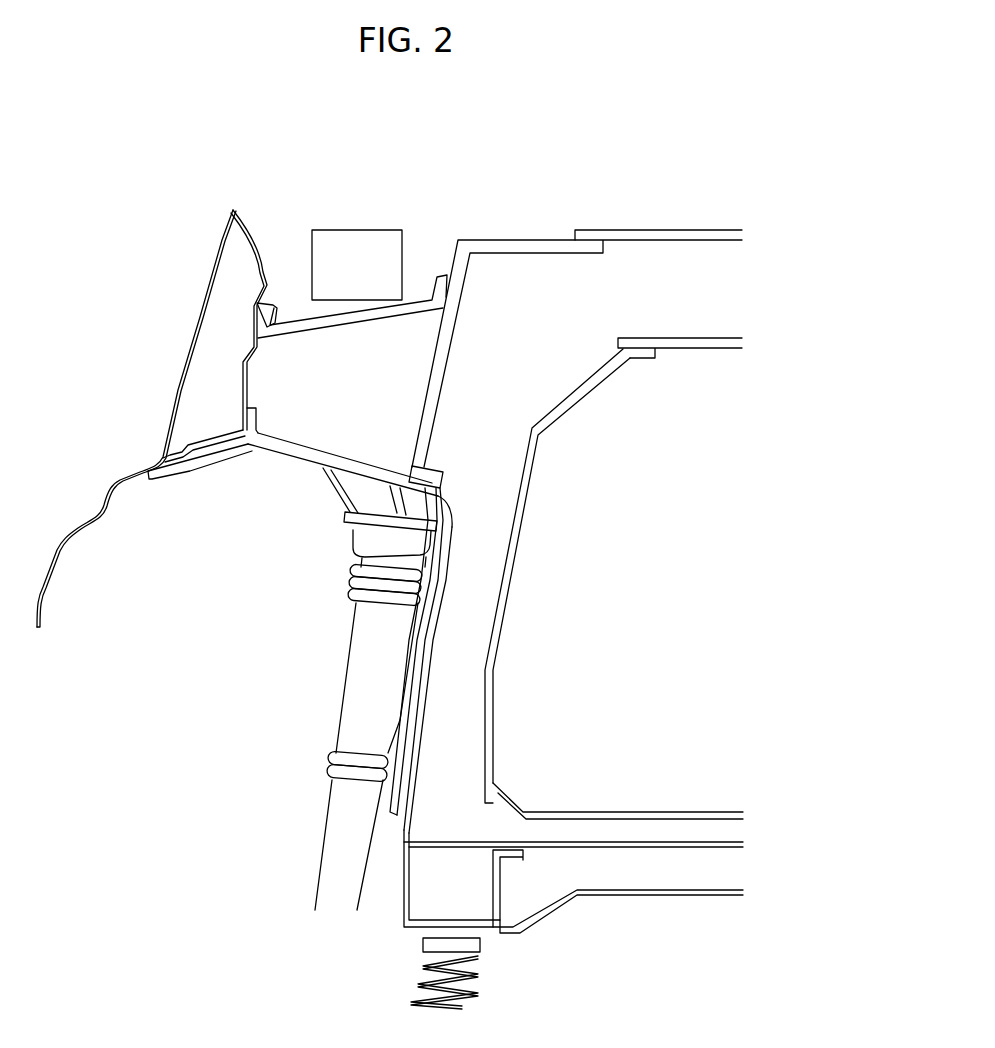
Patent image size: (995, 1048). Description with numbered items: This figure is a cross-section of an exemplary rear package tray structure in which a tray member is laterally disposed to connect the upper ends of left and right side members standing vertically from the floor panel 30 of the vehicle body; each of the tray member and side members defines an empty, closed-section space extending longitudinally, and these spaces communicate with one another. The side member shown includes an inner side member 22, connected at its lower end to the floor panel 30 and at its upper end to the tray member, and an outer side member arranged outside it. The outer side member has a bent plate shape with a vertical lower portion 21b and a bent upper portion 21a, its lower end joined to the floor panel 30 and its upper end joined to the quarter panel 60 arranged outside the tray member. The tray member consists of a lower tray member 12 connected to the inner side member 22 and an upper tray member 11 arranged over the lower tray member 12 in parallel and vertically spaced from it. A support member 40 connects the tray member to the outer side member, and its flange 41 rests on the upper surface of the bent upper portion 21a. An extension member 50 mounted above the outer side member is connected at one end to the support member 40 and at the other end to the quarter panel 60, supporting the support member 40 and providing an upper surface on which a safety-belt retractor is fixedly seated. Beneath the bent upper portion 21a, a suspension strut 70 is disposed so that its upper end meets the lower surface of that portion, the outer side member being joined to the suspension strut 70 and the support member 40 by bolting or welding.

The upper tray member 11 is at (697, 233).
The lower tray member 12 is at (708, 346).
The upper portion of outer side member 21a is at (313, 447).
The lower portion of outer side member 21b is at (432, 657).
The inner side member 22 is at (521, 530).
The floor panel 30 is at (627, 814).
The support member 40 is at (478, 247).
The flange 41 is at (430, 470).
The extension member 50 is at (293, 318).
The quarter panel 60 is at (241, 364).
The suspension strut 70 is at (358, 678).